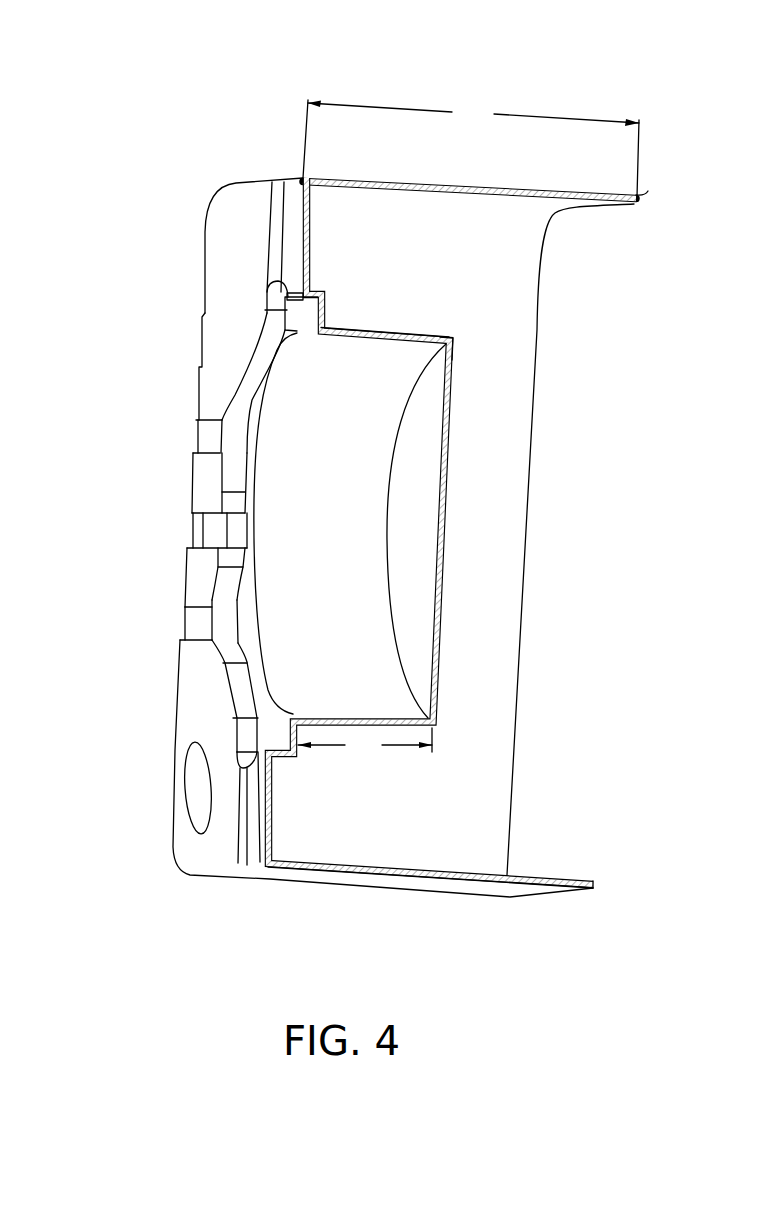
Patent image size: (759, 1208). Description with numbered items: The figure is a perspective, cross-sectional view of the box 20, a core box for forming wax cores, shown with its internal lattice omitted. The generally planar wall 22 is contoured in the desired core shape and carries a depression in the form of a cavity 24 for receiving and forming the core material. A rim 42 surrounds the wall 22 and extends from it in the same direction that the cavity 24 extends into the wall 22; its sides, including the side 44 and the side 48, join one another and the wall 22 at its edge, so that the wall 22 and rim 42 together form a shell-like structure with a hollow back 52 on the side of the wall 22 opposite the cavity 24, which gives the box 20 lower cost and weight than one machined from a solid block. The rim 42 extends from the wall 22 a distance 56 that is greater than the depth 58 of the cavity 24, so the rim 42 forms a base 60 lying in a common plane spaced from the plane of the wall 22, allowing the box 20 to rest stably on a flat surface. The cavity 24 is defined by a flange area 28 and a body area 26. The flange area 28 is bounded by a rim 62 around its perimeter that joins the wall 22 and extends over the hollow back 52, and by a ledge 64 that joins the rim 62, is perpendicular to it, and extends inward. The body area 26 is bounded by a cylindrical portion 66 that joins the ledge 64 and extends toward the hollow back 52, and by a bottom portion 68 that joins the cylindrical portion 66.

The box 20 is at (97, 104).
The wall 22 is at (220, 866).
The cavity 24 is at (318, 465).
The body area 26 is at (430, 527).
The flange area 28 is at (278, 728).
The rim 42 is at (423, 896).
The side 44 is at (642, 197).
The side 48 is at (340, 882).
The hollow back 52 is at (484, 312).
The distance 56 is at (471, 147).
The depth 58 is at (365, 743).
The base 60 is at (598, 885).
The rim 62 is at (316, 285).
The ledge 64 is at (324, 306).
The cylindrical portion 66 is at (423, 332).
The bottom portion 68 is at (458, 362).